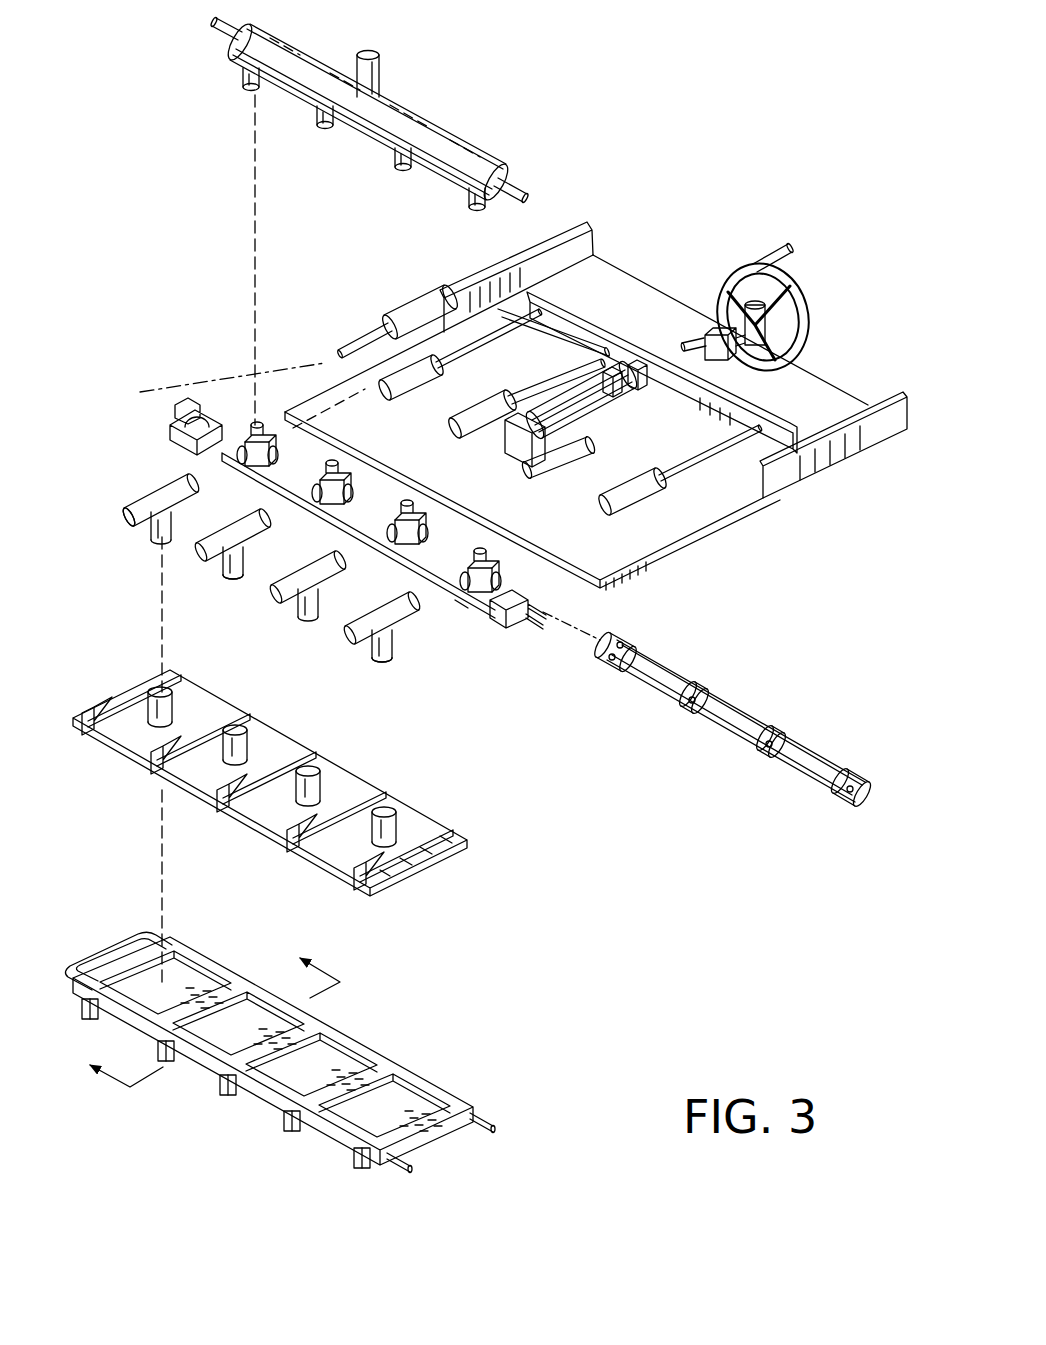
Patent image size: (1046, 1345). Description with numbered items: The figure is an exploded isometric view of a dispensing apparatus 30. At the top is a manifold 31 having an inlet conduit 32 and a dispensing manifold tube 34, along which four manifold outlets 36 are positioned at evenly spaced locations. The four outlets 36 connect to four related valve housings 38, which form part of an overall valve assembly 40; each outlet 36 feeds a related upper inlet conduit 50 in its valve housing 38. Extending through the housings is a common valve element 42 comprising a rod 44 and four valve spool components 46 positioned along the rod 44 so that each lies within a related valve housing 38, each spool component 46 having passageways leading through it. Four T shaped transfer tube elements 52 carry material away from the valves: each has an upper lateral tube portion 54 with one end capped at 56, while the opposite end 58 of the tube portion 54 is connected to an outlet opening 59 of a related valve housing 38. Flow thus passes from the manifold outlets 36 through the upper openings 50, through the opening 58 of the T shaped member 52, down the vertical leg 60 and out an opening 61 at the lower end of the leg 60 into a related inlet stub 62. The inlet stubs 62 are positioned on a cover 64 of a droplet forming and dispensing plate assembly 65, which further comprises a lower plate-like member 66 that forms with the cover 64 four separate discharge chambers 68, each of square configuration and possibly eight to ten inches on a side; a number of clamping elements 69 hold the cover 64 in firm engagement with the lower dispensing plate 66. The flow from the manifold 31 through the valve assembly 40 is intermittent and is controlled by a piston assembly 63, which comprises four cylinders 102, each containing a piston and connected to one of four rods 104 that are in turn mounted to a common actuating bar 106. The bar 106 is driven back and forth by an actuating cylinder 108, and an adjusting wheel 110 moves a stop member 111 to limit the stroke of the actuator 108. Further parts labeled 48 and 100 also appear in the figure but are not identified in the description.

The apparatus 30 is at (622, 86).
The manifold 31 is at (363, 119).
The inlet conduit 32 is at (382, 60).
The dispensing manifold tube 34 is at (425, 105).
The manifold outlets 36 is at (243, 75).
The valve housings 38 is at (358, 470).
The valve assembly 40 is at (519, 580).
The common valve element 42 is at (716, 724).
The rod 44 is at (811, 741).
The valve spool components 46 is at (688, 710).
The end collar 48 is at (626, 645).
The upper inlet conduit 50 is at (296, 456).
The T shaped transfer tube elements 52 is at (265, 568).
The upper lateral tube portion 54 is at (133, 500).
The capped end 56 is at (131, 520).
The opposite end 58 is at (250, 522).
The outlet opening 59 is at (227, 462).
The vertical leg 60 is at (152, 538).
The opening 61 is at (233, 578).
The inlet stub 62 is at (177, 702).
The piston assembly 63 is at (662, 513).
The cover 64 is at (343, 787).
The droplet forming and dispensing plate assembly 65 is at (304, 781).
The lower plate-like member 66 is at (306, 1052).
The discharge chambers 68 is at (337, 1067).
The clamping elements 69 is at (255, 820).
The air cylinder 100 is at (403, 300).
The cylinders 102 is at (447, 392).
The rods 104 is at (458, 350).
The common actuating bar 106 is at (612, 318).
The actuating cylinder 108 is at (510, 452).
The adjusting wheel 110 is at (808, 291).
The stop member 111 is at (740, 360).